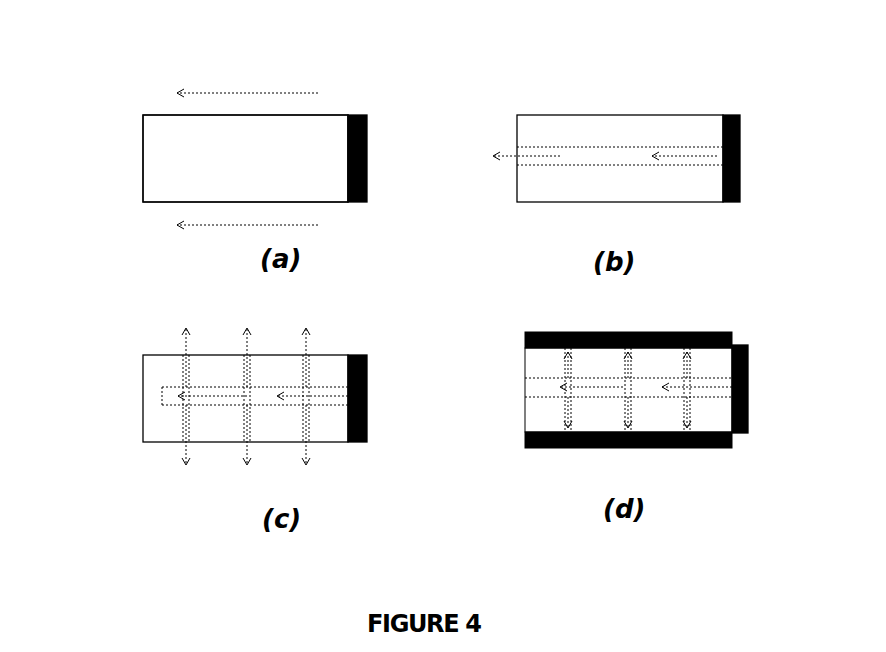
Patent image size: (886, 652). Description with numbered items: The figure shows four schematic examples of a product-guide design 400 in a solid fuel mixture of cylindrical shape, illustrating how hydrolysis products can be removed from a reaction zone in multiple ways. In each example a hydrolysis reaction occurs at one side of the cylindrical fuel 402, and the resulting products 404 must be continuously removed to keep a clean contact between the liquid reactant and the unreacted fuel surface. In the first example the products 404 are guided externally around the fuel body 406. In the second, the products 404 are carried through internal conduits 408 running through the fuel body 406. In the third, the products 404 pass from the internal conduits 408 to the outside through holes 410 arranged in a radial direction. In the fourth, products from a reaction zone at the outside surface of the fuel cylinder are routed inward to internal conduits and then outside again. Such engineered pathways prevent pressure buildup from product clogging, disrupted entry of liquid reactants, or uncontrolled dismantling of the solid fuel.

The product-guide design 400 is at (97, 77).
The cylindrical fuel 402 is at (362, 115).
The products 404 is at (237, 95).
The fuel body 406 is at (163, 115).
The internal conduits 408 is at (702, 148).
The holes 410 is at (247, 380).